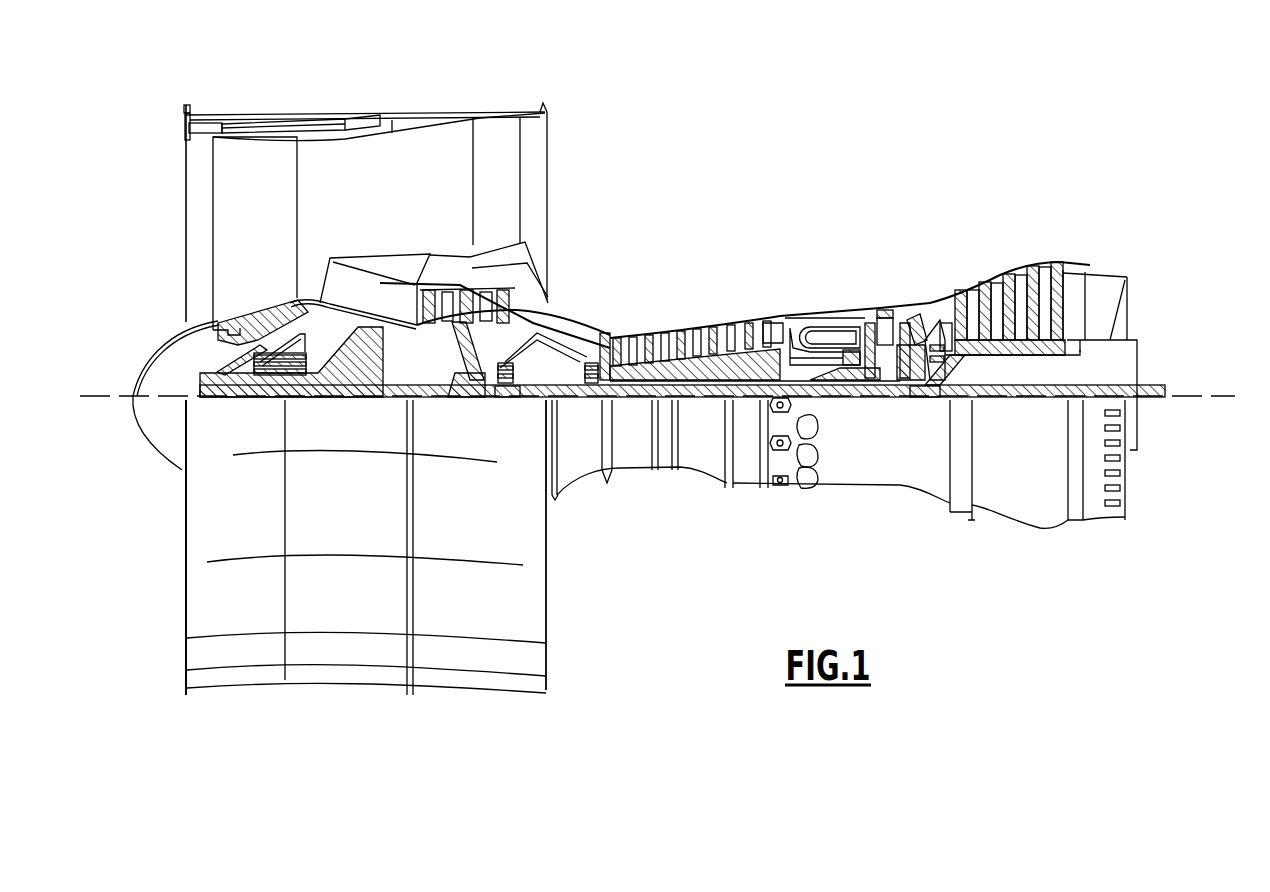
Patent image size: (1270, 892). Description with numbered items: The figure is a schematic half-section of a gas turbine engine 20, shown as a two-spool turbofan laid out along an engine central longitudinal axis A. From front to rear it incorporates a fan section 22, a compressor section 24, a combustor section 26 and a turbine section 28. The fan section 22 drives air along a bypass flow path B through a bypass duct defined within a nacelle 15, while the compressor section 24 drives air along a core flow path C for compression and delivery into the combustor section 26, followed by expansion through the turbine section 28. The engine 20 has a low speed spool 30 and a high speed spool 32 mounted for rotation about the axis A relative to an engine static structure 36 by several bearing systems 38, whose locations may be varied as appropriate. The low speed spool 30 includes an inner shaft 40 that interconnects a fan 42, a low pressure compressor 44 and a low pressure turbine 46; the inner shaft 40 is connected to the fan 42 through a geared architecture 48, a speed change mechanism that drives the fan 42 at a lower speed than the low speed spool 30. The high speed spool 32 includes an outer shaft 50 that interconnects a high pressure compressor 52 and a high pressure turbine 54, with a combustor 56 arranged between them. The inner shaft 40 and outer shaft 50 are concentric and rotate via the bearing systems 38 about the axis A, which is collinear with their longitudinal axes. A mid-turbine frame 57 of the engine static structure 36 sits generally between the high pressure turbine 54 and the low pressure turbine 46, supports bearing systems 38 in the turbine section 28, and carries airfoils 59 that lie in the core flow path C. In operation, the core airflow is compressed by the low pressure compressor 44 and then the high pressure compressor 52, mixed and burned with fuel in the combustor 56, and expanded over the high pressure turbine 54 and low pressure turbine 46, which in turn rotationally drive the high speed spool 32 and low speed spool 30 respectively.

The nacelle 15 is at (365, 118).
The gas turbine engine 20 is at (828, 160).
The fan section 22 is at (297, 103).
The compressor section 24 is at (597, 303).
The combustor section 26 is at (820, 300).
The turbine section 28 is at (965, 257).
The low speed spool 30 is at (704, 400).
The high speed spool 32 is at (750, 355).
The engine static structure 36 is at (745, 487).
The bearing systems 38 is at (500, 388).
The inner shaft 40 is at (565, 400).
The fan 42 is at (240, 242).
The low pressure compressor 44 is at (465, 305).
The low pressure turbine 46 is at (1012, 300).
The geared architecture 48 is at (370, 372).
The outer shaft 50 is at (827, 397).
The high pressure compressor 52 is at (678, 370).
The high pressure turbine 54 is at (888, 312).
The combustor 56 is at (820, 340).
The mid-turbine frame 57 is at (928, 305).
The airfoils 59 is at (930, 333).
The engine central longitudinal axis A is at (1222, 396).
The bypass flow path B is at (330, 188).
The core flow path C is at (377, 293).